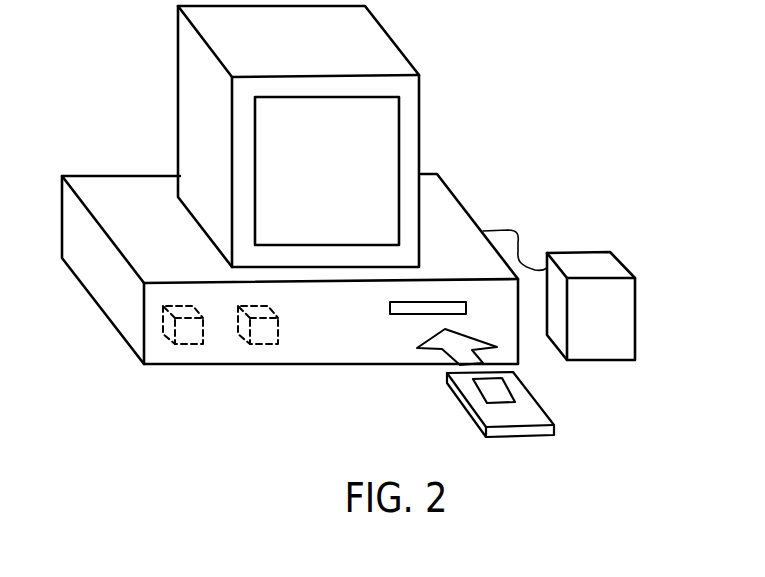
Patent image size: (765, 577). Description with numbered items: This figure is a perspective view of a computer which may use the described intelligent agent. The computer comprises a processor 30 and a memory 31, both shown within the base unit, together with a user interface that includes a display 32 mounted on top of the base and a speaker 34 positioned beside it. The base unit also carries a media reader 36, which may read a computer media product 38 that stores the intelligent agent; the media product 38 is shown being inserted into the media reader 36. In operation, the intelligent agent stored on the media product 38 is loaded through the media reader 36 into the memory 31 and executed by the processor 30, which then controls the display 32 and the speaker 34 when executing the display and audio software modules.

The processor 30 is at (193, 338).
The memory 31 is at (267, 338).
The display 32 is at (377, 43).
The speaker 34 is at (593, 258).
The media reader 36 is at (411, 310).
The computer media product 38 is at (530, 408).